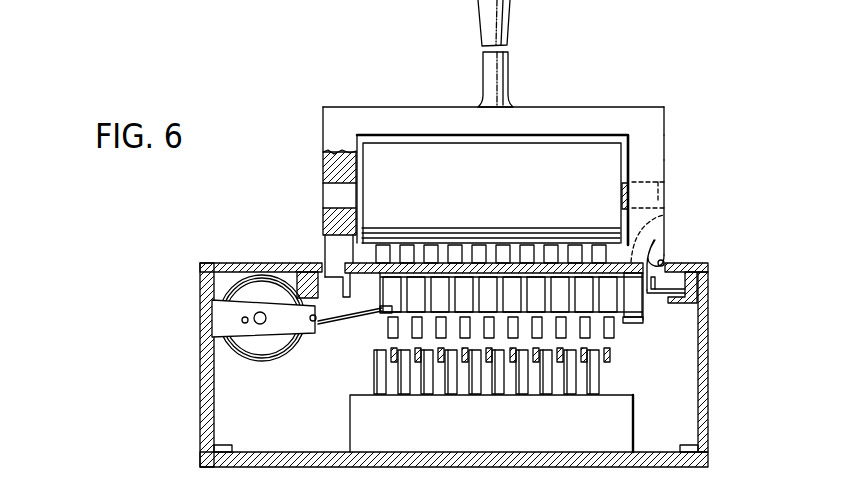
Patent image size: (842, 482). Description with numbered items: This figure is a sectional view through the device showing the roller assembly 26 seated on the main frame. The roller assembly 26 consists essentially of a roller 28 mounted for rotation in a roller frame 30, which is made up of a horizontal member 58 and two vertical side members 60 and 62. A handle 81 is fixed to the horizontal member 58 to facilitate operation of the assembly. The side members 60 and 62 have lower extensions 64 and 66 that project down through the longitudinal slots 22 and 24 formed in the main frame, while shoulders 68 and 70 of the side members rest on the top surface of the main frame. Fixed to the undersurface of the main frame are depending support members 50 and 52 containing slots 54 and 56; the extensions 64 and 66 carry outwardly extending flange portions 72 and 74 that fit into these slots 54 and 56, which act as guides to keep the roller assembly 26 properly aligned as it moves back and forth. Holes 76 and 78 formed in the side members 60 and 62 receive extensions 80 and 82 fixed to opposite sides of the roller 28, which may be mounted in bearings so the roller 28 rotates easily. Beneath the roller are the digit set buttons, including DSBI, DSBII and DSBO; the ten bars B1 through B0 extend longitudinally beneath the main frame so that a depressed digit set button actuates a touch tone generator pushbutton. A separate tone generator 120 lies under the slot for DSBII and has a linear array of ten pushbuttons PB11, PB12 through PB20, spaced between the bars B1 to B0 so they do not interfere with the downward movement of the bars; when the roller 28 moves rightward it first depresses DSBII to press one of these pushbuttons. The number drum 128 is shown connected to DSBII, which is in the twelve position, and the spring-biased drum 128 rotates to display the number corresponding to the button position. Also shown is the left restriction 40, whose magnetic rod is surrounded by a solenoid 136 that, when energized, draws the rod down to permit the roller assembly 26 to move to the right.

The roller assembly 26 is at (314, 92).
The horizontal member 58 is at (403, 112).
The vertical side member 60 is at (323, 137).
The roller frame 30 is at (664, 122).
The vertical side member 62 is at (664, 143).
The hole 76 is at (330, 175).
The extension 80 is at (330, 196).
The roller 28 is at (492, 190).
The longitudinal slot 22 is at (325, 262).
The shoulder 68 is at (353, 262).
The lower extension 64 is at (350, 287).
The slot 54 is at (312, 270).
The depending support member 50 is at (316, 298).
The number drum 128 is at (264, 362).
The flange portion 72 is at (336, 297).
The digit set button DSBI is at (389, 250).
The digit set button DSBII is at (411, 250).
The digit set button DSBO is at (610, 250).
The solenoid 136 is at (633, 324).
The bar B1 is at (386, 350).
The bar B0 is at (612, 356).
The pushbutton PB11 is at (372, 373).
The pushbutton PB12 is at (403, 394).
The pushbutton PB20 is at (602, 380).
The tone generator 120 is at (350, 428).
The hole 78 is at (668, 185).
The extension 82 is at (668, 196).
The left restriction 40 is at (665, 218).
The shoulder 70 is at (666, 253).
The longitudinal slot 24 is at (675, 262).
The slot 56 is at (703, 268).
The lower extension 66 is at (652, 295).
The flange portion 74 is at (680, 296).
The depending support member 52 is at (686, 302).
The handle 81 is at (507, 26).